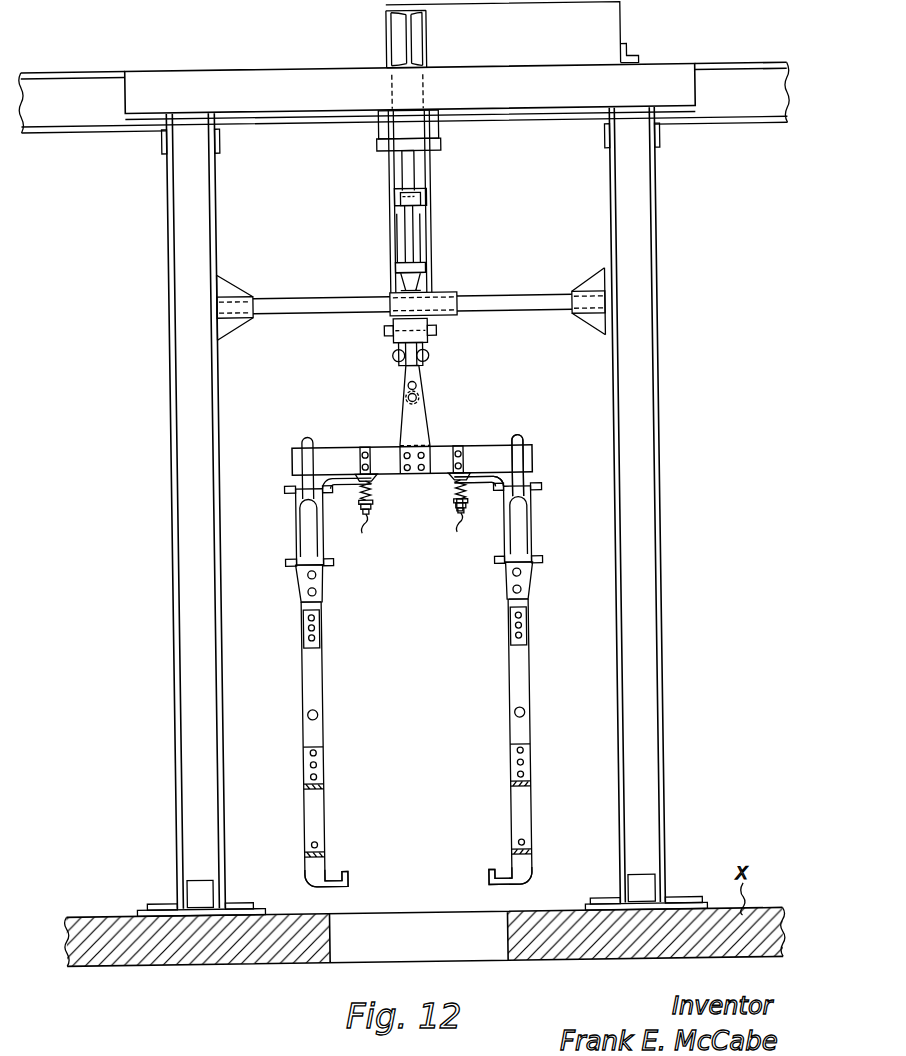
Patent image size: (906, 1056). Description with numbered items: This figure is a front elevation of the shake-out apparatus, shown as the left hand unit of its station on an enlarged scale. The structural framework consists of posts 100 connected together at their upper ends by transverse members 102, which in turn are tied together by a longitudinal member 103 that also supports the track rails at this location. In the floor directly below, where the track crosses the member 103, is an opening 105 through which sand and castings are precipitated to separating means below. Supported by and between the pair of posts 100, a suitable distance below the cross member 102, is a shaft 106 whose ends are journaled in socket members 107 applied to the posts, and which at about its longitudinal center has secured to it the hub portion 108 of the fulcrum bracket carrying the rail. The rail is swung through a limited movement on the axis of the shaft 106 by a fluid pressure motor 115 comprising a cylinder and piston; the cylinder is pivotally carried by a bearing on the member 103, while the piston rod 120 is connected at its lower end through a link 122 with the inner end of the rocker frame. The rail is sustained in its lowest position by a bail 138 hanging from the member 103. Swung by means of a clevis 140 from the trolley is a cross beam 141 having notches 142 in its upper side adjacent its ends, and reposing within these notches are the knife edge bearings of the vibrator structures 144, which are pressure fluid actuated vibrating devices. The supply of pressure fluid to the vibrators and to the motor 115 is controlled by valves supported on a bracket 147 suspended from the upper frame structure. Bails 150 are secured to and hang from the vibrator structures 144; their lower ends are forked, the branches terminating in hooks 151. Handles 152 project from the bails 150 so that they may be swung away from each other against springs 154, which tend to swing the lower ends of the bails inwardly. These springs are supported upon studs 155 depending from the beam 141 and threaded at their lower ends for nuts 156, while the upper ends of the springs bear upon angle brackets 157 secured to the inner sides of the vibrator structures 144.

The posts 100 is at (206, 431).
The transverse members 102 is at (281, 78).
The longitudinal member 103 is at (417, 36).
The openings 105 is at (410, 927).
The shafts 106 is at (316, 297).
The socket members 107 is at (233, 296).
The hub portions 108 is at (449, 293).
The fluid pressure motor 115 is at (389, 127).
The piston rod 120 is at (415, 170).
The link 122 is at (405, 231).
The bail 138 is at (392, 181).
The clevis 140 is at (425, 425).
The cross beam 141 is at (348, 456).
The notches 142 is at (527, 448).
The vibrator structures 144 is at (297, 529).
The bracket 147 is at (629, 33).
The bails 150 is at (302, 790).
The hooks 151 is at (332, 871).
The handles 152 is at (315, 715).
The springs 154 is at (455, 492).
The studs 155 is at (418, 528).
The nuts 156 is at (458, 503).
The angle brackets 157 is at (479, 478).